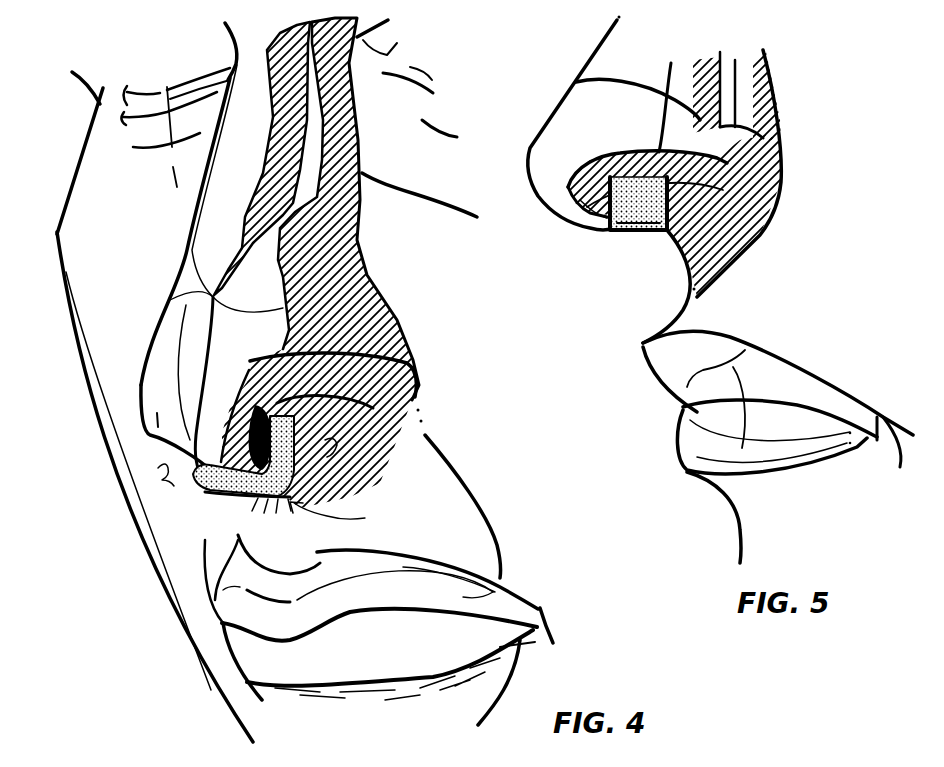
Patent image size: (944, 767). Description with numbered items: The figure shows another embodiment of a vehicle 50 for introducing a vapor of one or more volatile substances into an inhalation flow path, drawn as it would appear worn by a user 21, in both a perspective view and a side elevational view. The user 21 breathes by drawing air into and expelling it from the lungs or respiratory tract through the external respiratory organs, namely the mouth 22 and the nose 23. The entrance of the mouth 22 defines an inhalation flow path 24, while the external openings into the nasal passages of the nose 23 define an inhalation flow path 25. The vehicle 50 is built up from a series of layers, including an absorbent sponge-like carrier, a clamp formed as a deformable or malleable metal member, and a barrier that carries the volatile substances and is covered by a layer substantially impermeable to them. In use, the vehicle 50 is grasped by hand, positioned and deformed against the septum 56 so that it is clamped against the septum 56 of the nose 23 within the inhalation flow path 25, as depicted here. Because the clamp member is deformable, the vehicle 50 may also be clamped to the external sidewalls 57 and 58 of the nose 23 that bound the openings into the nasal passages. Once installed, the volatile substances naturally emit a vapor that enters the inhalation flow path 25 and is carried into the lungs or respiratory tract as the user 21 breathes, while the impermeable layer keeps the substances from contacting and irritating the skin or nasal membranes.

In FIG. 4, the user 21 is at (100, 250).
In FIG. 4, the mouth 22 is at (503, 583).
In FIG. 5, the mouth 22 is at (767, 388).
In FIG. 4, the nose 23 is at (362, 262).
In FIG. 5, the nose 23 is at (625, 60).
In FIG. 4, the inhalation flow path 24 is at (331, 603).
In FIG. 5, the inhalation flow path 24 is at (683, 409).
In FIG. 4, the inhalation flow path 25 is at (266, 417).
In FIG. 5, the inhalation flow path 25 is at (627, 240).
In FIG. 4, the vehicle 50 is at (344, 517).
In FIG. 5, the vehicle 50 is at (677, 226).
In FIG. 4, the septum 56 is at (203, 481).
In FIG. 5, the septum 56 is at (590, 217).
In FIG. 4, the external sidewall 57 is at (152, 434).
In FIG. 4, the external sidewall 58 is at (397, 362).
In FIG. 5, the external sidewall 58 is at (687, 83).